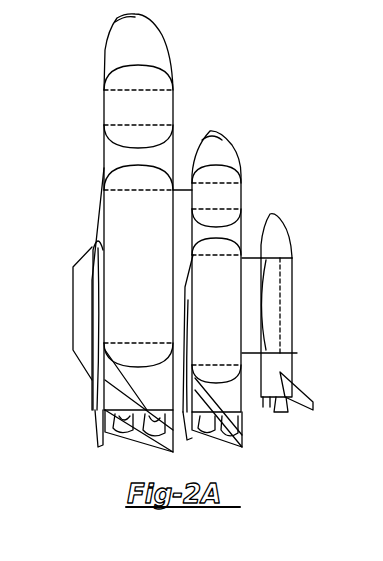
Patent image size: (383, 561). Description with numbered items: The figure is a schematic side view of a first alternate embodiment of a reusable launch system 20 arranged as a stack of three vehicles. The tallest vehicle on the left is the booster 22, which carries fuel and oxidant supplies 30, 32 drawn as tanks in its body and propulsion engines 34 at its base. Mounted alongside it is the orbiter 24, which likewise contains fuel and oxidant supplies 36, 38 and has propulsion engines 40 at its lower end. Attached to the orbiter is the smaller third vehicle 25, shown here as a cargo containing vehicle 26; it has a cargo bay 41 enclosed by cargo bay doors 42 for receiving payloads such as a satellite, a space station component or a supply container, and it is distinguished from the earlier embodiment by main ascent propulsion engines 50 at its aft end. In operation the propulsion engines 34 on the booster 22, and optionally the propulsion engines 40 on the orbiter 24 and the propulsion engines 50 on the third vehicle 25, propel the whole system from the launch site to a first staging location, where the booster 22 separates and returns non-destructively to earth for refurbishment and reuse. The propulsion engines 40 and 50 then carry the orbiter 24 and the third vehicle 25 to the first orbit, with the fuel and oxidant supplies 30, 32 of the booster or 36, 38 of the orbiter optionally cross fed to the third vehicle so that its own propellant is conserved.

The reusable launch system 20 is at (283, 118).
The booster 22 is at (118, 50).
The orbiter 24 is at (225, 147).
The third vehicle 25 is at (280, 247).
The cargo containing vehicle 26 is at (273, 228).
The fuel supply 30 is at (123, 215).
The oxidant supply 32 is at (127, 108).
The propulsion engines 34 is at (141, 443).
The fuel supply 36 is at (247, 252).
The oxidant supply 38 is at (218, 173).
The propulsion engines 40 is at (203, 423).
The cargo bay 41 is at (295, 310).
The cargo bay doors 42 is at (285, 285).
The main ascent propulsion engines 50 is at (287, 407).